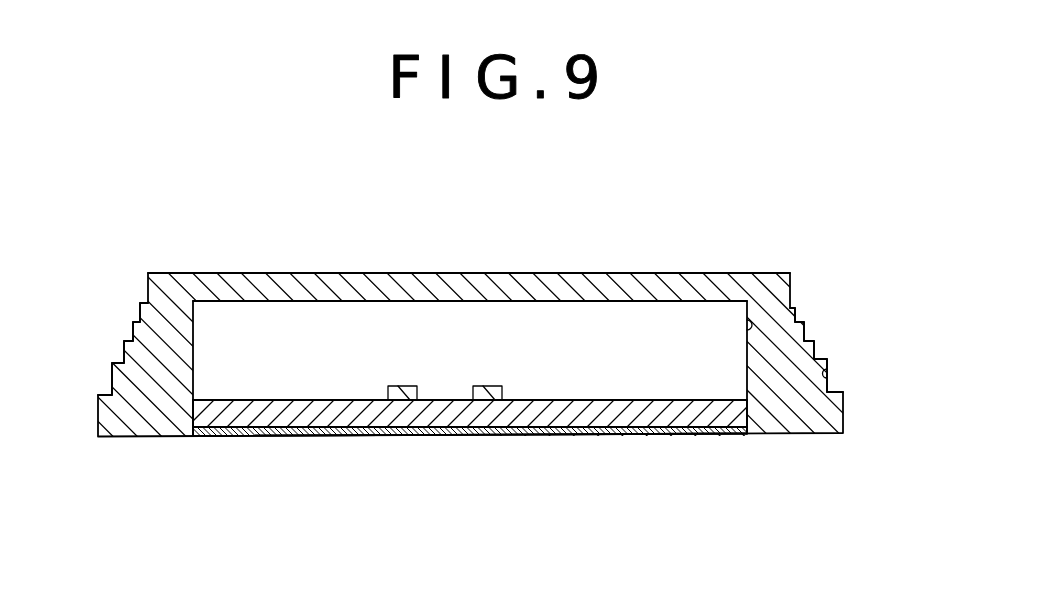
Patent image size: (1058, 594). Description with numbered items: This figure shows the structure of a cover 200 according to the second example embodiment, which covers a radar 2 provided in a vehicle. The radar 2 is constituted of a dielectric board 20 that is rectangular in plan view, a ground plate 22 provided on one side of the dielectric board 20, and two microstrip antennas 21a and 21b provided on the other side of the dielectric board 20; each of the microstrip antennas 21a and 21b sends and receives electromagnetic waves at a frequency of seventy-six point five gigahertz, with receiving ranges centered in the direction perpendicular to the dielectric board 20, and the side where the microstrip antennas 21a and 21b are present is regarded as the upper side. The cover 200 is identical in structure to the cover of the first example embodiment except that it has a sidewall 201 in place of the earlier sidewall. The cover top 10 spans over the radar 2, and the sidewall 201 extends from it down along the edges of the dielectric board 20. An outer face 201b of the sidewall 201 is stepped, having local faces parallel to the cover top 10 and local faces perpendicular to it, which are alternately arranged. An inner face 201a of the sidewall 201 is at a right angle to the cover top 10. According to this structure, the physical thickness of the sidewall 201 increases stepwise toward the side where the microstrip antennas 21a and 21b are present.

The radar 2 is at (658, 440).
The cover top 10 is at (503, 280).
The dielectric board 20 is at (525, 418).
The microstrip antenna 21a is at (400, 392).
The microstrip antenna 21b is at (484, 392).
The ground plate 22 is at (570, 434).
The cover 200 is at (758, 271).
The sidewall 201 is at (133, 352).
The inner face 201a is at (748, 328).
The outer face 201b is at (828, 376).